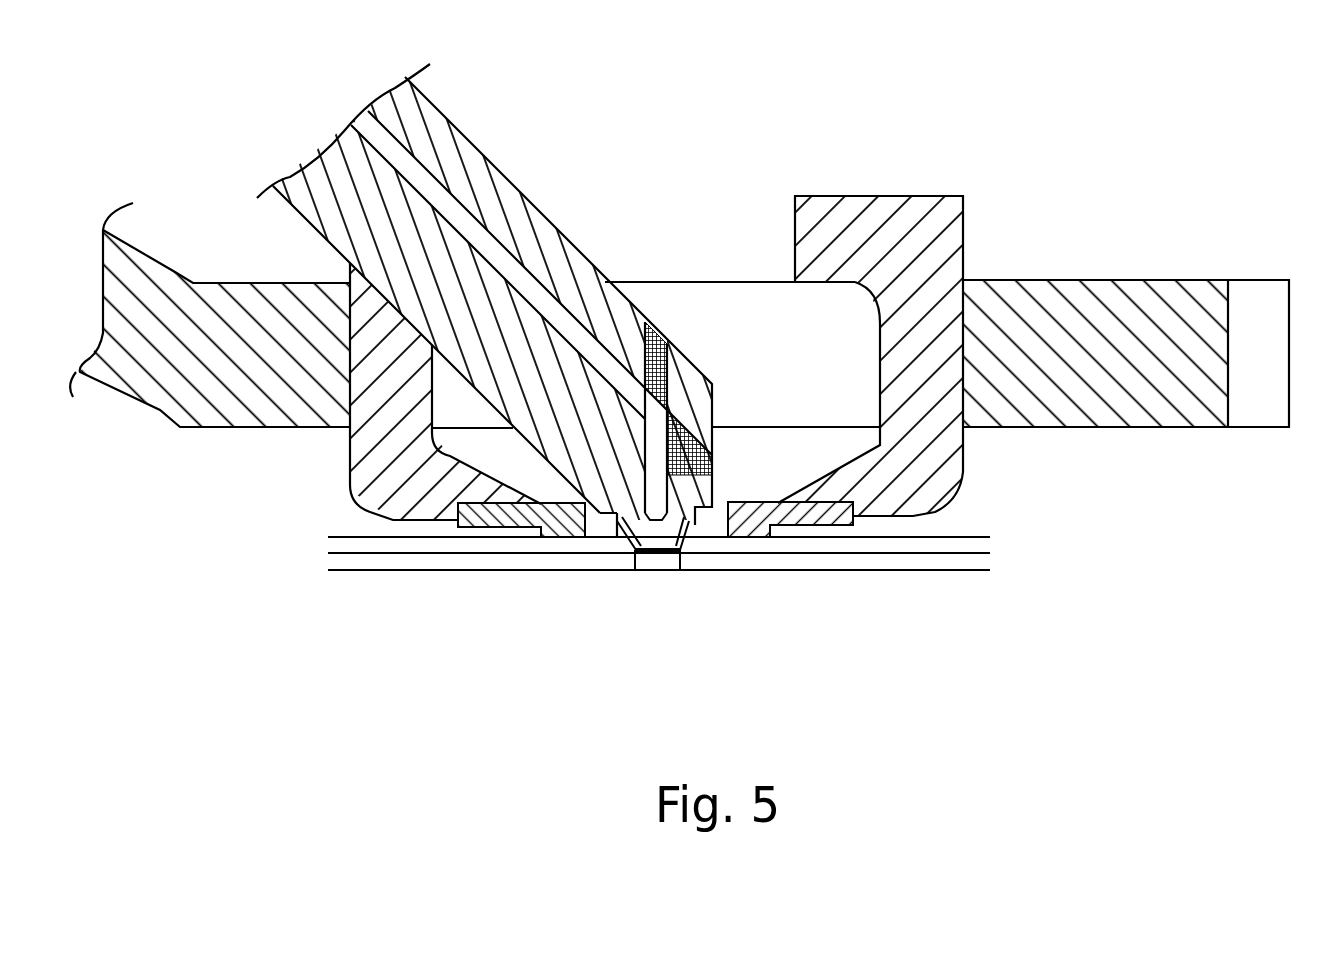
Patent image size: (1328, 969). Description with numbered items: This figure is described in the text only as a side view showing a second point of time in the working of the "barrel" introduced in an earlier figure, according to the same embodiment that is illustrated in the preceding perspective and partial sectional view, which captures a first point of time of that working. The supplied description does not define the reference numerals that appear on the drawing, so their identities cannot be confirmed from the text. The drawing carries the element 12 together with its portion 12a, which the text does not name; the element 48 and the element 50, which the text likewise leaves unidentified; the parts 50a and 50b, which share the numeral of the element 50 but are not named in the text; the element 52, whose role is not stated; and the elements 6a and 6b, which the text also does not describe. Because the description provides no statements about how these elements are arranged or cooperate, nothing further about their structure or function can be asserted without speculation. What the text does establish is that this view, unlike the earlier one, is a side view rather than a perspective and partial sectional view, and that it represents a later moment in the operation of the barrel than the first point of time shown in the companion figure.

The frame body 12 is at (162, 388).
The frame portion 12a is at (866, 222).
The inclined sleeve 48 is at (455, 152).
The probe rod 50 is at (500, 262).
The probe tip 50a is at (620, 537).
The probe insulating sleeve 50b is at (686, 553).
The contact 52 is at (646, 580).
The wire conductor 6a is at (930, 556).
The wire insulation 6b is at (967, 540).